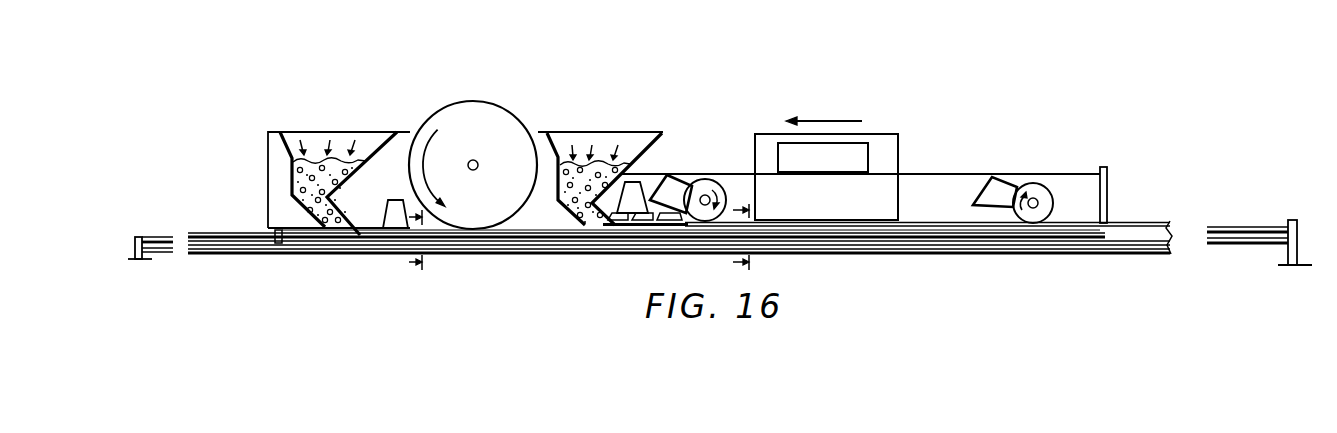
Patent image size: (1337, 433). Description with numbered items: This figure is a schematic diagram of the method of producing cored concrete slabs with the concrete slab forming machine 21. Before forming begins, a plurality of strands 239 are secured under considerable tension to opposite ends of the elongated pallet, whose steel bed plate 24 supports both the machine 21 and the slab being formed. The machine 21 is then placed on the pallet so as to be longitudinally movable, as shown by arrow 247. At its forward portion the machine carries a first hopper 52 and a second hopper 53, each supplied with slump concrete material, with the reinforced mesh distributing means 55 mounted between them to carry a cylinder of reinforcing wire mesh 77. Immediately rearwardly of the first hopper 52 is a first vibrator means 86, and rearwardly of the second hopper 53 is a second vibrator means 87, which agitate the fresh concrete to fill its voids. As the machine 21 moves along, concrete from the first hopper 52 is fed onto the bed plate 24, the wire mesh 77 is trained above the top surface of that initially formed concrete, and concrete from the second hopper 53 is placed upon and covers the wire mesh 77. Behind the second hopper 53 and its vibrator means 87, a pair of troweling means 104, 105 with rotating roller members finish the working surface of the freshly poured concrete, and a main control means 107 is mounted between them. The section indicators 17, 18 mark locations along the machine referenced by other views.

The concrete slab forming machine 21 is at (967, 104).
The first hopper 52 is at (320, 132).
The second hopper 53 is at (605, 133).
The reinforced mesh distributing means 55 is at (488, 102).
The first vibrator means 86 is at (395, 199).
The second vibrator means 87 is at (645, 183).
The troweling means 104 is at (672, 188).
The troweling means 105 is at (1017, 181).
The main control means 107 is at (870, 134).
The arrow 247 is at (818, 121).
The section line 17 is at (446, 205).
The section line 18 is at (738, 239).
The bed plate 24 is at (943, 252).
The reinforcing wire mesh 77 is at (560, 235).
The strands 239 is at (205, 233).